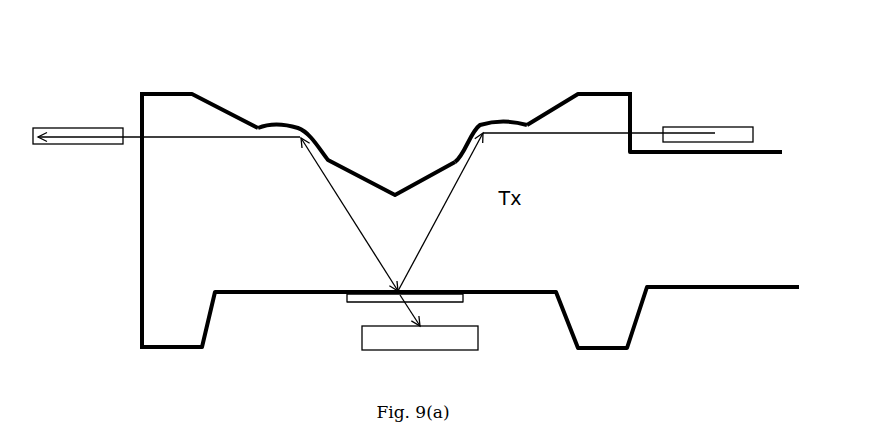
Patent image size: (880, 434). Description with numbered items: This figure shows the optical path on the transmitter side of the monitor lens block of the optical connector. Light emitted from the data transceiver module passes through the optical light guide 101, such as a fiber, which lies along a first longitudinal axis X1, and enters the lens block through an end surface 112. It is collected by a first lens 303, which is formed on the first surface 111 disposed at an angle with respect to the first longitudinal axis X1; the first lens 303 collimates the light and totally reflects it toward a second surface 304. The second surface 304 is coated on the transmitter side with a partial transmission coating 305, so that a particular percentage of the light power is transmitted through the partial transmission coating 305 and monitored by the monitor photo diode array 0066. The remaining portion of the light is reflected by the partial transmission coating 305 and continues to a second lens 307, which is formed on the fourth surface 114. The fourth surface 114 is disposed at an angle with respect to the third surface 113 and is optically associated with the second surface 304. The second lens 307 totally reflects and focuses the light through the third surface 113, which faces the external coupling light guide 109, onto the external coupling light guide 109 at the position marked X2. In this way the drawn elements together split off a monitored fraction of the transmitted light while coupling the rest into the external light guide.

The optical light guide 101 is at (722, 138).
The external coupling light guide 109 is at (55, 128).
The first surface 111 is at (560, 100).
The end surface 112 is at (635, 113).
The third surface 113 is at (140, 284).
The fourth surface 114 is at (346, 165).
The first lens 303 is at (470, 128).
The second surface 304 is at (430, 292).
The partial transmission coating 305 is at (462, 302).
The second lens 307 is at (300, 133).
The first longitudinal axis X1 is at (699, 128).
The position X2 is at (83, 137).
The monitor photo diode array 0066 is at (381, 345).